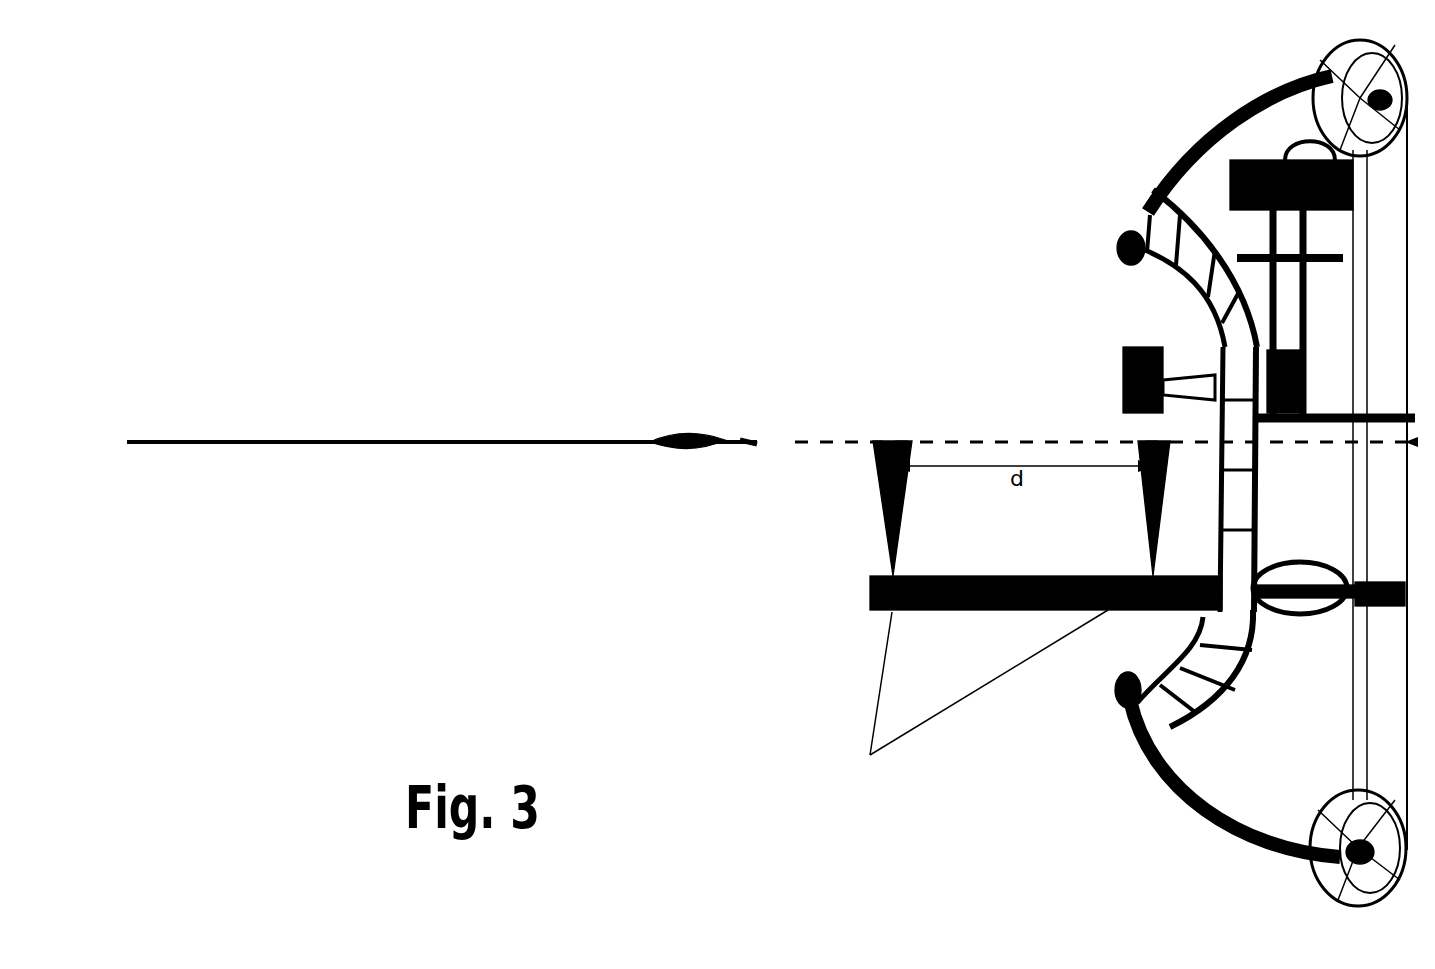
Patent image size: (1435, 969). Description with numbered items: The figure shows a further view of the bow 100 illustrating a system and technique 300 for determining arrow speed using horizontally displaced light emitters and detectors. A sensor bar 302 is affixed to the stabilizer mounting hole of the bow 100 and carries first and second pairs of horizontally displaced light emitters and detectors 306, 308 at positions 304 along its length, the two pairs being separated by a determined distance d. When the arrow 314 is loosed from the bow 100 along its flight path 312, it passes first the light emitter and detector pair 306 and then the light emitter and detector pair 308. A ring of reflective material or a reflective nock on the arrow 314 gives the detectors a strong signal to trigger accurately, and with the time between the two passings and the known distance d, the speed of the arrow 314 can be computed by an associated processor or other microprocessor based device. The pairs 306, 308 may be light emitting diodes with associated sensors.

The bow 100 is at (1118, 164).
The system and technique 300 is at (758, 902).
The sensor bar 302 is at (870, 600).
The positions 304 is at (975, 700).
The first pair of horizontally displaced light emitters and detectors 306 is at (1114, 547).
The second pair of horizontally displaced light emitters and detectors 308 is at (856, 546).
The flight path 312 is at (1002, 404).
The arrow 314 is at (686, 404).